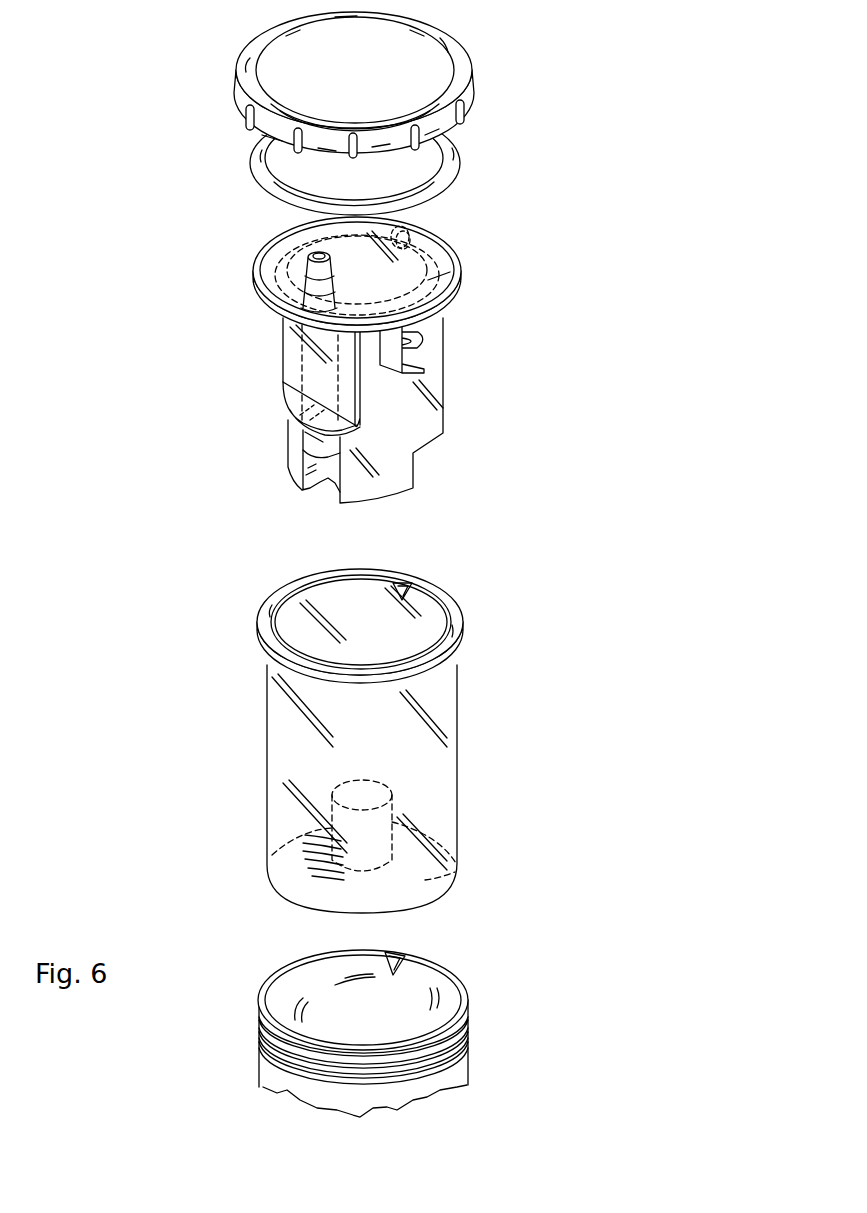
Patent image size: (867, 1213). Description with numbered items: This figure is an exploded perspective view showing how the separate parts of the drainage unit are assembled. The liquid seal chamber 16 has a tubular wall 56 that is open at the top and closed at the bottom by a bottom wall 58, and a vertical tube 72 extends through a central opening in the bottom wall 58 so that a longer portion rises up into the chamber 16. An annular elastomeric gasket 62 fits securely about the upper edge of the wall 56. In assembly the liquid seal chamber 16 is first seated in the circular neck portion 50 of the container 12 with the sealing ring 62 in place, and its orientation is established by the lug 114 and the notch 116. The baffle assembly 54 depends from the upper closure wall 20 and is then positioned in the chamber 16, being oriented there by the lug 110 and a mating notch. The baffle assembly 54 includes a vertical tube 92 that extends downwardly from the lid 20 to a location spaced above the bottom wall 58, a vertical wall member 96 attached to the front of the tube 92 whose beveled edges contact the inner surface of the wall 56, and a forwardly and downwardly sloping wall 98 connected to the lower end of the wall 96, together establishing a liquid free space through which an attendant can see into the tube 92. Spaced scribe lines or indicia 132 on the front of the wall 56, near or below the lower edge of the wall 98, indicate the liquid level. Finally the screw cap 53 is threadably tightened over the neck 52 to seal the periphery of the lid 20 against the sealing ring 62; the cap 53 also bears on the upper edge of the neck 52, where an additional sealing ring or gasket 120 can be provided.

The container 12 is at (490, 1066).
The liquid seal chamber 16 is at (266, 723).
The upper closure wall 20 is at (427, 283).
The circular neck portion 50 is at (285, 1096).
The neck 52 is at (444, 990).
The screw cap 53 is at (462, 58).
The baffle assembly 54 is at (478, 372).
The tubular wall 56 is at (447, 727).
The bottom wall 58 is at (457, 880).
The annular gasket 62 is at (463, 630).
The vertical tube 72 is at (392, 800).
The vertical tube 92 is at (292, 476).
The vertical wall member 96 is at (293, 350).
The sloping wall 98 is at (290, 400).
The lug 110 is at (452, 230).
The lug 114 is at (420, 583).
The notch 116 is at (400, 963).
The sealing ring or gasket 120 is at (457, 170).
The indicia 132 is at (345, 855).